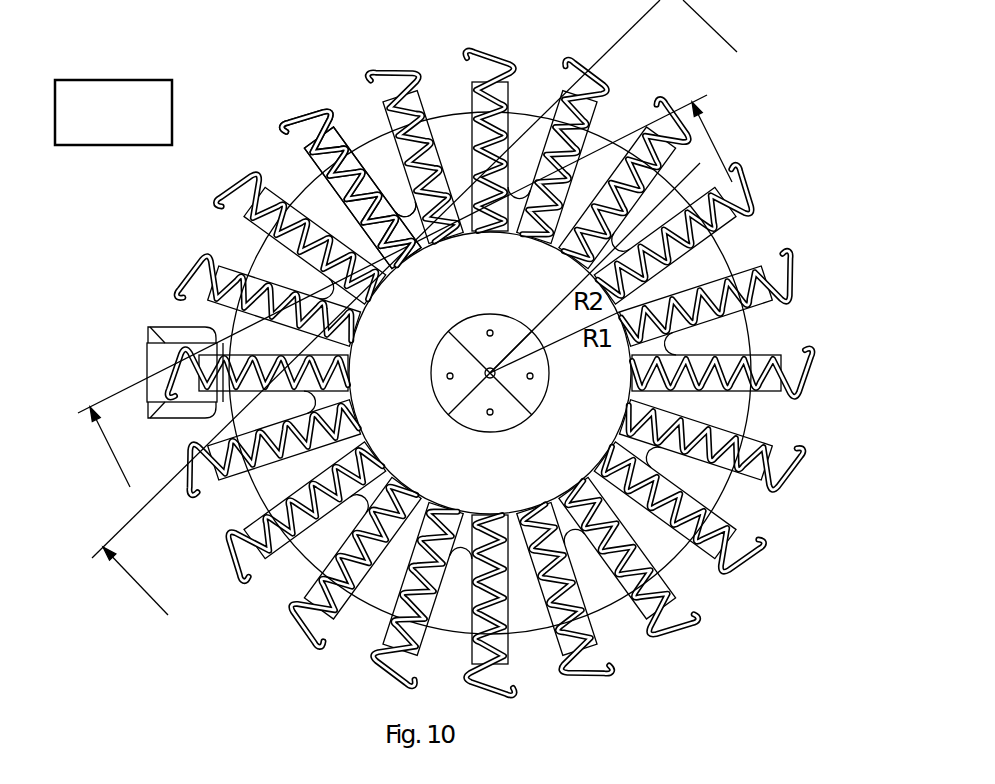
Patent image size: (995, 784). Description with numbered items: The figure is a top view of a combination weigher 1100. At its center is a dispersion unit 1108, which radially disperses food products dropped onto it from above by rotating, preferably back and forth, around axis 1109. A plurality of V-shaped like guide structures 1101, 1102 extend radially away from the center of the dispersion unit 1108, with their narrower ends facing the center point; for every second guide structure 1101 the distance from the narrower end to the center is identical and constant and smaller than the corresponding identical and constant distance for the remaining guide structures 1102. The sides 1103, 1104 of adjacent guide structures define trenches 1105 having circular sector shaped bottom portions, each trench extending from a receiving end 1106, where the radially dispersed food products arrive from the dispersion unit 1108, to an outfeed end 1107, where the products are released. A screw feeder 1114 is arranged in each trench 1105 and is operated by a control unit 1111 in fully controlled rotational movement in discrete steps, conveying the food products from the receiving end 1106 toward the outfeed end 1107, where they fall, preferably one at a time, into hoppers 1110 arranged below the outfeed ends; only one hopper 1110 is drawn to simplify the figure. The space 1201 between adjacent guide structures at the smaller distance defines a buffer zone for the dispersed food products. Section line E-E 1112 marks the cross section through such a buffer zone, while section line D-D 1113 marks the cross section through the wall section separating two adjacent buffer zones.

The combination weigher 1100 is at (771, 110).
The V-shaped like guide structure 1101 is at (410, 173).
The V-shaped like guide structure 1102 is at (490, 139).
The side of V-shaped like guide structure 1103 is at (352, 133).
The side of V-shaped like guide structure 1104 is at (310, 160).
The trench 1105 is at (404, 238).
The receiving end 1106 is at (392, 278).
The outfeed end 1107 is at (343, 116).
The dispersion unit 1108 is at (572, 453).
The axis 1109 is at (507, 392).
The hopper 1110 is at (150, 357).
The control unit 1111 is at (101, 146).
The cross sectional view E-E 1112 is at (104, 402).
The cross sectional view D-D 1113 is at (118, 530).
The screw feeder 1114 is at (300, 118).
The space 1201 is at (457, 507).